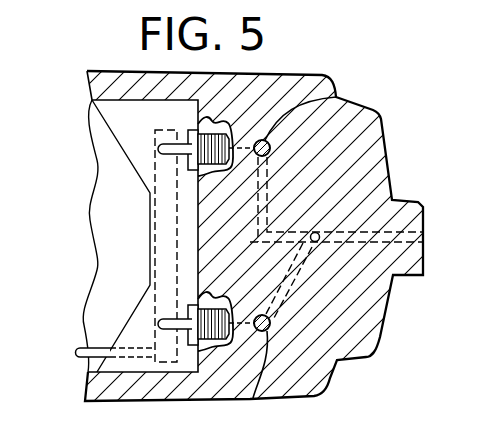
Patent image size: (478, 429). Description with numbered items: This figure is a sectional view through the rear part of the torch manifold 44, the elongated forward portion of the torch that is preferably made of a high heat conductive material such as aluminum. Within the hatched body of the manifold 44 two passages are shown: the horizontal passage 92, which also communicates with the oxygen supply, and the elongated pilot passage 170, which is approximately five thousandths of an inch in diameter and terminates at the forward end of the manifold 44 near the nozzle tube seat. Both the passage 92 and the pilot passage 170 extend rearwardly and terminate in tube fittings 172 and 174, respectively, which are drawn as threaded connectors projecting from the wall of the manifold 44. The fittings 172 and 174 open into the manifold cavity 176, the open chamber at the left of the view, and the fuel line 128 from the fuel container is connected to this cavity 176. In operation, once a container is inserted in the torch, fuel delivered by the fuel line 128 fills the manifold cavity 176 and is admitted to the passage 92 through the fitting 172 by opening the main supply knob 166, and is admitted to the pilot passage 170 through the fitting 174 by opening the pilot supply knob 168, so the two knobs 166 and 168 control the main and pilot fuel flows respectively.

The manifold 44 is at (295, 76).
The pilot supply knob 168 is at (337, 98).
The main supply knob 166 is at (270, 368).
The pilot passage 170 is at (268, 173).
The horizontal passage 92 is at (290, 283).
The tube fitting 172 is at (188, 306).
The tube fitting 174 is at (192, 130).
The manifold cavity 176 is at (156, 229).
The fuel line 128 is at (82, 349).